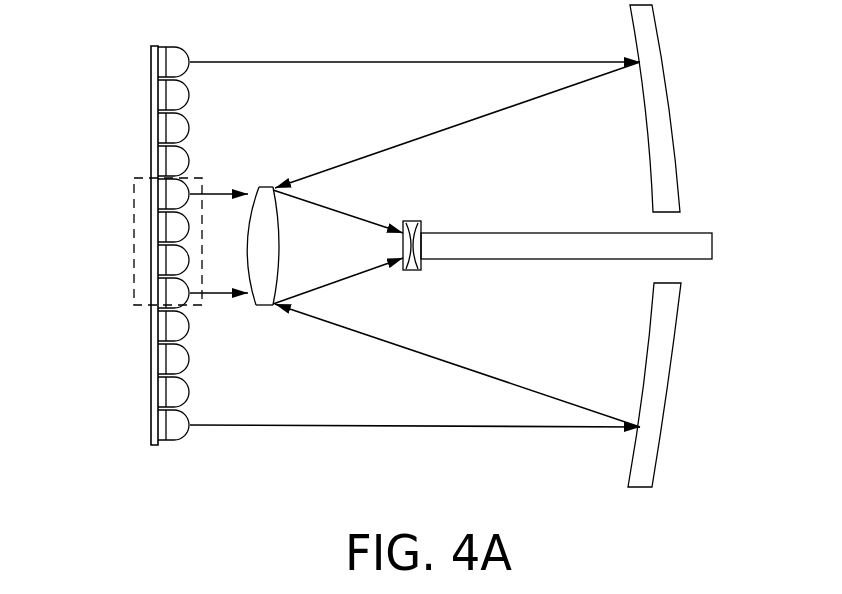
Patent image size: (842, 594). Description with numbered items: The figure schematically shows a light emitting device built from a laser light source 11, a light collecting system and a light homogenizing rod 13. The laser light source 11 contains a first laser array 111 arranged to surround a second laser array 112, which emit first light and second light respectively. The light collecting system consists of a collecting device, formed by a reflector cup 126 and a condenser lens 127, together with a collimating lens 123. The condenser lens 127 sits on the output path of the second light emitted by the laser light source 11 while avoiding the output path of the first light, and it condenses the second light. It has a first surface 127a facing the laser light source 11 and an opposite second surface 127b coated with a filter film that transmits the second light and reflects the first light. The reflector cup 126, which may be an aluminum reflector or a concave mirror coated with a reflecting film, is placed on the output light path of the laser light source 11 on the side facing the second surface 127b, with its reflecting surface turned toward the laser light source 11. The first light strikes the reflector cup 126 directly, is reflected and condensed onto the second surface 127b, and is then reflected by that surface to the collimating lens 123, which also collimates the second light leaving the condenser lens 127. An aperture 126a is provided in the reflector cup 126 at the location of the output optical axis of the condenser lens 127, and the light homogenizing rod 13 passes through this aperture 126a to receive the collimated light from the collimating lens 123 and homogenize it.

The laser light source 11 is at (113, 245).
The first laser array 111 is at (151, 133).
The second laser array 112 is at (140, 241).
The condenser lens 127 is at (291, 242).
The first surface 127a is at (254, 308).
The second surface 127b is at (276, 308).
The collimating lens 123 is at (410, 222).
The light homogenizing rod 13 is at (698, 248).
The reflector cup 126 is at (660, 82).
The aperture 126a is at (673, 220).